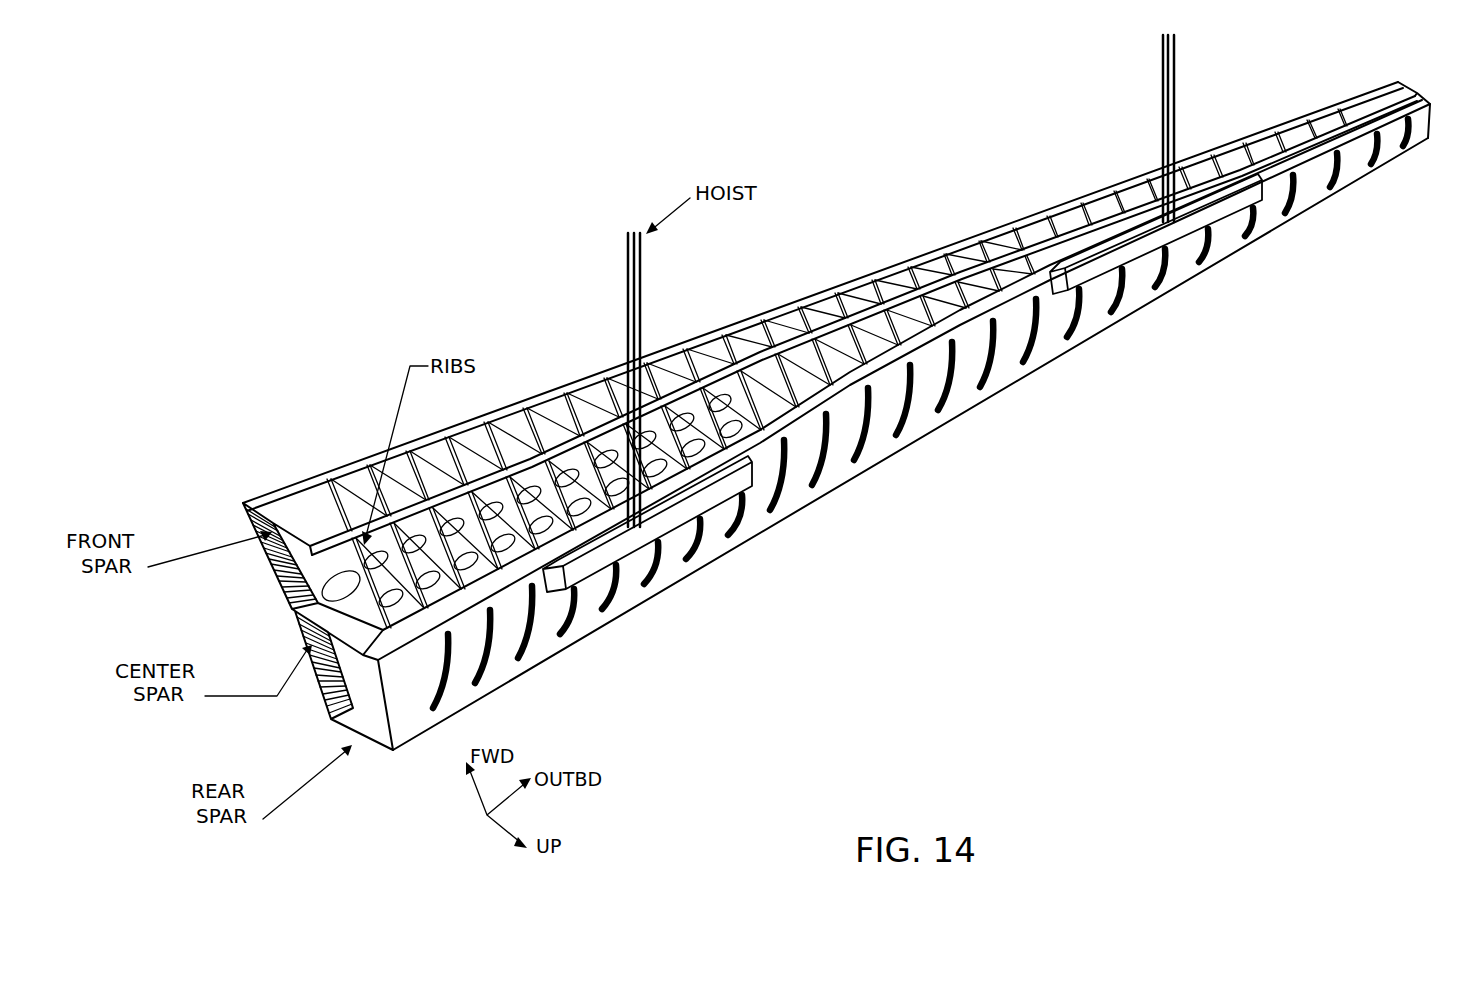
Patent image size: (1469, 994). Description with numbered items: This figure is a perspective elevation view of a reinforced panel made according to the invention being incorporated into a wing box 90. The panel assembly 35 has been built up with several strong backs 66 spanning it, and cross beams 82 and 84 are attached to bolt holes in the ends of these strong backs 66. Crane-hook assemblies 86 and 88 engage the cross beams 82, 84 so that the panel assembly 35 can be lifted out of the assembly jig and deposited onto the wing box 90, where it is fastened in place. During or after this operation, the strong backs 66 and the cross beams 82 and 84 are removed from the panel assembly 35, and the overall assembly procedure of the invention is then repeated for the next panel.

The wing box 90 is at (912, 228).
The panel assembly 35 is at (921, 422).
The strong backs 66 is at (996, 380).
The cross beam 82 is at (580, 580).
The cross beam 84 is at (1098, 282).
The crane-hook assembly 86 is at (644, 296).
The crane-hook assembly 88 is at (1184, 56).